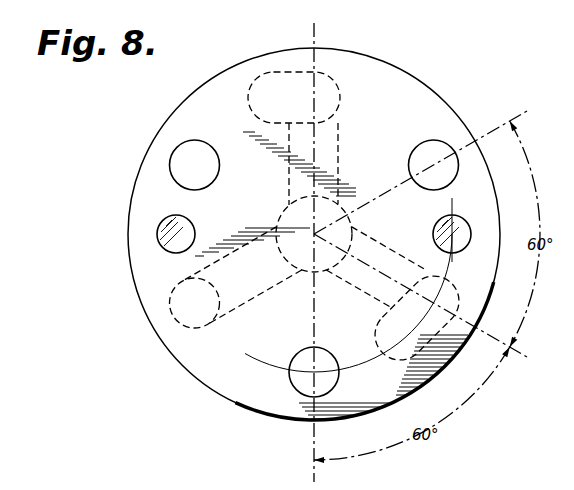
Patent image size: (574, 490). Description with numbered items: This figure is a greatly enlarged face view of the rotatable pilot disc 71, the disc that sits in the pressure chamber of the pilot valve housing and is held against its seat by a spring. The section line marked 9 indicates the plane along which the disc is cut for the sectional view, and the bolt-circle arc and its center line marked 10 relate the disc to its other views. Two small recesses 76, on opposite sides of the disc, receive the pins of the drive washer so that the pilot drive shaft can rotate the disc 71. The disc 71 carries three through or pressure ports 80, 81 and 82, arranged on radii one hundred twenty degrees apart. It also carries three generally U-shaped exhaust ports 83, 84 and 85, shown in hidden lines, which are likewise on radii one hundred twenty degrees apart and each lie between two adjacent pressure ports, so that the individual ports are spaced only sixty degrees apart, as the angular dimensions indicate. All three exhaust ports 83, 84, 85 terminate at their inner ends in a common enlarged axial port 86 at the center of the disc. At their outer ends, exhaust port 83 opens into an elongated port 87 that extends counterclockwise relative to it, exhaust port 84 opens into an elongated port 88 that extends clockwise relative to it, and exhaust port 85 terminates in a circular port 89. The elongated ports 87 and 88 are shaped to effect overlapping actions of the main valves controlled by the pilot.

The section line 9- 9 is at (314, 23).
The bolt circle / hole center line 10 is at (458, 202).
The pilot disc 71 is at (195, 386).
The recesses 76 is at (160, 232).
The pressure port 80 is at (176, 153).
The pressure port 81 is at (440, 145).
The pressure port 82 is at (300, 392).
The exhaust port 83 is at (339, 152).
The exhaust port 84 is at (357, 288).
The exhaust port 85 is at (250, 297).
The common enlarged axial port 86 is at (283, 214).
The elongated port 87 is at (272, 76).
The elongated port 88 is at (398, 358).
The circular port 89 is at (172, 316).